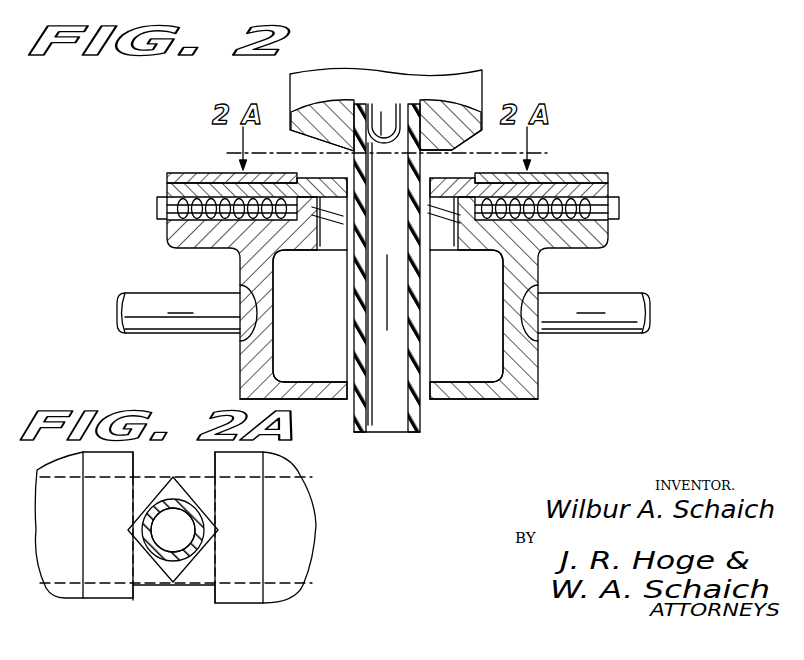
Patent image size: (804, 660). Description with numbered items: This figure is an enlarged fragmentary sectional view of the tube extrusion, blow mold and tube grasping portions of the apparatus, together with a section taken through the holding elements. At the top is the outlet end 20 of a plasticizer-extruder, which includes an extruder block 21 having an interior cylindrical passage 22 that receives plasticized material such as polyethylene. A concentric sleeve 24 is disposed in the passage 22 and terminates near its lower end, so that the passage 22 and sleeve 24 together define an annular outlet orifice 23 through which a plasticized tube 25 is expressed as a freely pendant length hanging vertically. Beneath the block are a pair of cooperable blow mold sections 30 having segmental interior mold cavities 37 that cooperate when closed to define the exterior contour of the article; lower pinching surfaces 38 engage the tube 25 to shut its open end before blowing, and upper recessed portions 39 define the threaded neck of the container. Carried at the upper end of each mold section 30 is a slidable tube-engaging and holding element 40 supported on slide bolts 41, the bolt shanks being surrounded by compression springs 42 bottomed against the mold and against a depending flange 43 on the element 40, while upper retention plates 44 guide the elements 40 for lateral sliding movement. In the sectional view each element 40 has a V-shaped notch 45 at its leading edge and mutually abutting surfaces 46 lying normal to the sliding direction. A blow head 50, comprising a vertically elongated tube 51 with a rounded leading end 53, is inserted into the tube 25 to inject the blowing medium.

In FIG. 2, the outlet end of plasticizer-extruder 20 is at (455, 51).
In FIG. 2, the extruder block 21 is at (466, 77).
In FIG. 2, the interior cylindrical passage 22 is at (413, 133).
In FIG. 2, the annular outlet orifice 23 is at (340, 135).
In FIG. 2, the concentric sleeve 24 is at (365, 128).
In FIG. 2, the plasticized tube 25 is at (430, 170).
In FIG. 2A, the plasticized tube 25 is at (188, 553).
In FIG. 2, the blow mold sections 30 is at (549, 368).
In FIG. 2, the interior mold cavities 37 is at (503, 354).
In FIG. 2, the lower pinching surfaces 38 is at (432, 400).
In FIG. 2, the upper recessed portions 39 is at (462, 232).
In FIG. 2, the tube-engaging and holding element 40 is at (156, 190).
In FIG. 2A, the tube-engaging and holding element 40 is at (256, 511).
In FIG. 2, the slide bolts 41 is at (156, 210).
In FIG. 2, the compression springs 42 is at (198, 220).
In FIG. 2, the depending flange 43 is at (288, 208).
In FIG. 2, the upper retention plates 44 is at (194, 173).
In FIG. 2A, the upper retention plates 44 is at (50, 540).
In FIG. 2, the V-shaped notch 45 is at (347, 190).
In FIG. 2A, the V-shaped notch 45 is at (132, 542).
In FIG. 2, the mutually abutting surfaces 46 is at (390, 197).
In FIG. 2A, the mutually abutting surfaces 46 is at (182, 478).
In FIG. 2, the blow head 50 is at (393, 106).
In FIG. 2, the vertically elongated tube 51 is at (380, 110).
In FIG. 2, the rounded leading end 53 is at (372, 153).